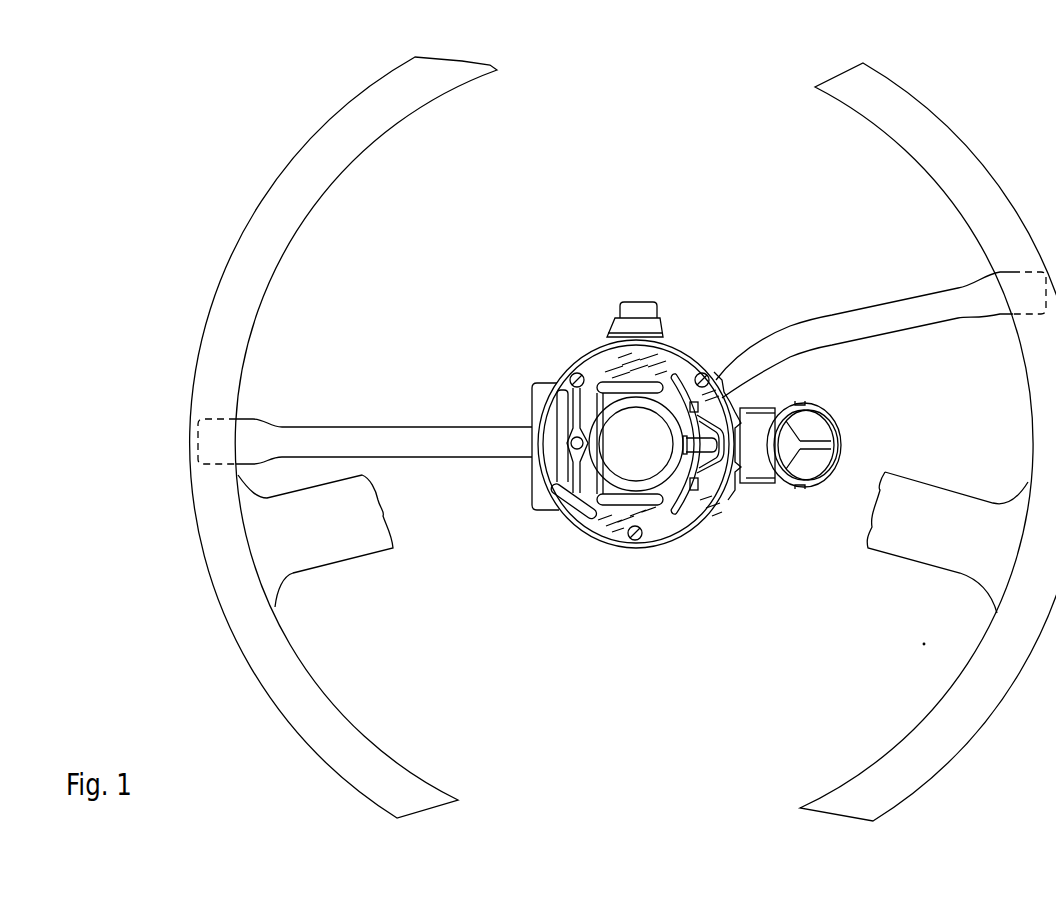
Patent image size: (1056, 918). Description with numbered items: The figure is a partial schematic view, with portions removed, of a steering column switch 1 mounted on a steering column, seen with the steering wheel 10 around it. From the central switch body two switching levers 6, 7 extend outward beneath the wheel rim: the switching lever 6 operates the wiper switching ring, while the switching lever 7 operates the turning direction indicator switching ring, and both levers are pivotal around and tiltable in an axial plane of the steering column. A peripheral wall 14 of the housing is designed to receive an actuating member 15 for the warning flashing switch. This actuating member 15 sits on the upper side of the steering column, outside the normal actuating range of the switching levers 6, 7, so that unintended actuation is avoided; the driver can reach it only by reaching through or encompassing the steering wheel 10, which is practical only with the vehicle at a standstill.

The steering column switch 1 is at (655, 387).
The switching lever 6 is at (882, 317).
The switching lever 7 is at (390, 424).
The steering wheel 10 is at (273, 635).
The peripheral wall 14 is at (683, 357).
The actuating member 15 is at (662, 317).